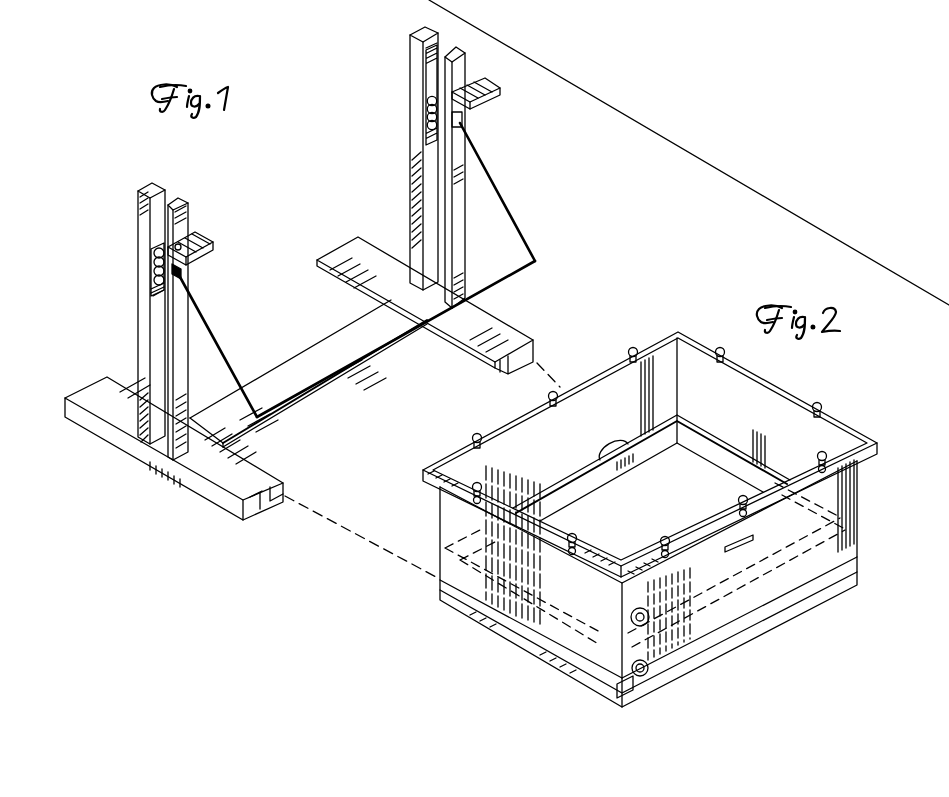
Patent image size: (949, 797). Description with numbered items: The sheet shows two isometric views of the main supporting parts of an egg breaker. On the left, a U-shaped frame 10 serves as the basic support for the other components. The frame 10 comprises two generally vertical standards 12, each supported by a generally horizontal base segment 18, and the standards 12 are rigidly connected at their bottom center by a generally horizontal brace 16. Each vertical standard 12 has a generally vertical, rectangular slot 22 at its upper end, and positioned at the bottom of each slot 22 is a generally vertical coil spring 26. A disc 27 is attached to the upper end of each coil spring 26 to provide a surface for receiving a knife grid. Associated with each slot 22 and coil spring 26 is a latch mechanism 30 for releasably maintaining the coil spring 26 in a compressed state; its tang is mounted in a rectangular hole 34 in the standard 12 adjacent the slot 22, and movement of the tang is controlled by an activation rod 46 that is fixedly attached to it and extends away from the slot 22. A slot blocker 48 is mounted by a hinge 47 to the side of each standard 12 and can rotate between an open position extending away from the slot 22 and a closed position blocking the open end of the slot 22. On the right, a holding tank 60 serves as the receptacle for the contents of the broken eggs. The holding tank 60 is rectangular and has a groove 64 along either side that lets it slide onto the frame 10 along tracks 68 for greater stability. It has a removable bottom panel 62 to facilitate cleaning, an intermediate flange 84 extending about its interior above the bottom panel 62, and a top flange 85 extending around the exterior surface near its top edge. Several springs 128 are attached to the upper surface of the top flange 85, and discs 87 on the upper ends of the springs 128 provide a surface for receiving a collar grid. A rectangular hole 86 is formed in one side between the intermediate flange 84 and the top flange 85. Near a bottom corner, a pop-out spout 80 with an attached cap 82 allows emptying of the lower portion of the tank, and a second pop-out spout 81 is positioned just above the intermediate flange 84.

In FIG. 1, the U-shaped frame 10 is at (300, 185).
In FIG. 1, the vertical standard 12 is at (155, 318).
In FIG. 1, the horizontal brace 16 is at (313, 385).
In FIG. 1, the base segment 18 is at (180, 474).
In FIG. 1, the rectangular slot 22 is at (213, 141).
In FIG. 1, the coil spring 26 is at (155, 283).
In FIG. 1, the disc 27 is at (153, 248).
In FIG. 1, the latch mechanism 30 is at (197, 276).
In FIG. 1, the rectangular hole 34 is at (196, 306).
In FIG. 1, the activation rod 46 is at (536, 266).
In FIG. 1, the hinge 47 is at (180, 244).
In FIG. 1, the slot blocker 48 is at (203, 245).
In FIG. 1, the track 68 is at (240, 470).
In FIG. 2, the holding tank 60 is at (922, 497).
In FIG. 2, the removable bottom panel 62 is at (690, 650).
In FIG. 2, the groove 64 is at (593, 675).
In FIG. 2, the pop-out spout 80 is at (637, 680).
In FIG. 2, the second pop-out spout 81 is at (656, 614).
In FIG. 2, the cap 82 is at (650, 672).
In FIG. 2, the intermediate flange 84 is at (637, 458).
In FIG. 2, the top flange 85 is at (437, 467).
In FIG. 2, the rectangular hole 86 is at (743, 547).
In FIG. 2, the disc 87 is at (478, 481).
In FIG. 2, the spring 128 is at (472, 493).